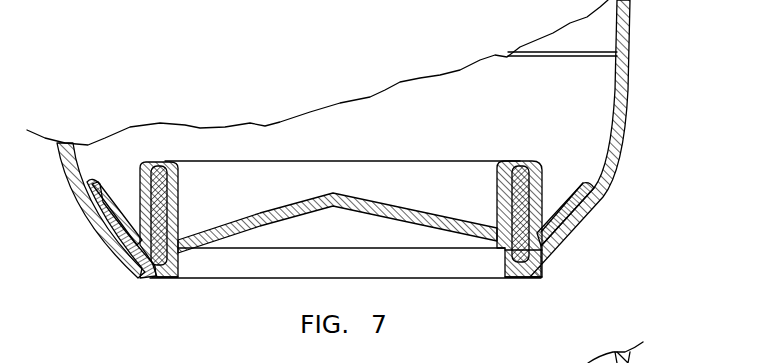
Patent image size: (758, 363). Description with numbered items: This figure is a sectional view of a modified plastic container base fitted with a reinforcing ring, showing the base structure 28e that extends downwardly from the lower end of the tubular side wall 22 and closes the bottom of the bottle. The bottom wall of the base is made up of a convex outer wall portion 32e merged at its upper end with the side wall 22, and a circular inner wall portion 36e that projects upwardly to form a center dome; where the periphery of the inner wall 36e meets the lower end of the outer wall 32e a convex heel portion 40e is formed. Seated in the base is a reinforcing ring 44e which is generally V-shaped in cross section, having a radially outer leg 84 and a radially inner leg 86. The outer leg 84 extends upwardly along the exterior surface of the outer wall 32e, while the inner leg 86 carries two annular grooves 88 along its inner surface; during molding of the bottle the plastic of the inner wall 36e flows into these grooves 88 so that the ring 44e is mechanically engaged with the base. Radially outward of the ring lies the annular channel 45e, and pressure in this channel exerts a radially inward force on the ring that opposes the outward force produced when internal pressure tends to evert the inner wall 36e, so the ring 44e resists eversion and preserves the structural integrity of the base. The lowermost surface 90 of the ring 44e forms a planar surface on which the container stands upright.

The tubular side wall 22 is at (630, 33).
The convex outer wall portion 32e is at (618, 148).
The radially outer leg 84 is at (598, 205).
The convex heel portion 40e is at (540, 237).
The inner wall portion 36e is at (333, 195).
The radially inner leg 86 is at (170, 163).
The annular grooves 88 is at (196, 208).
The reinforcing ring 44e is at (150, 283).
The annular channel 45e is at (131, 222).
The lowermost surface 90 is at (527, 282).
The base structure 28e is at (590, 257).